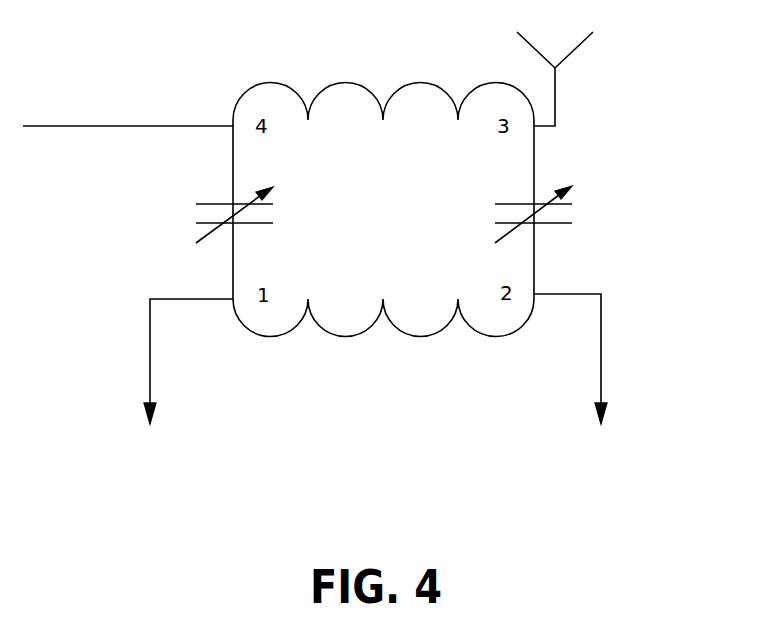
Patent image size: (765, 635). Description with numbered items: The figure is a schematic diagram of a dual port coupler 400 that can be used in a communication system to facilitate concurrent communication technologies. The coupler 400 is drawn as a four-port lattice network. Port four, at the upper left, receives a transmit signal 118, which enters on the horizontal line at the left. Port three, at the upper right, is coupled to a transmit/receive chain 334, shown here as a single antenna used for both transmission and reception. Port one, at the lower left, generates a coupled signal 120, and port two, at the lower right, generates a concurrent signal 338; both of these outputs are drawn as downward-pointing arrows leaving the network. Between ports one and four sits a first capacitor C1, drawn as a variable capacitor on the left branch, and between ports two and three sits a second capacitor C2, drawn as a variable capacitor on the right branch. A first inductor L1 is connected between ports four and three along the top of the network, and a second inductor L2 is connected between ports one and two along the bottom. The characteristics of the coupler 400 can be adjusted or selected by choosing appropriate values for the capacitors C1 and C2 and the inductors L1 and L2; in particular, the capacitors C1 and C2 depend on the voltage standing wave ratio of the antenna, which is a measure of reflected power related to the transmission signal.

The transmit signal 118 is at (73, 126).
The coupled signal 120 is at (150, 360).
The transmit/receive chain 334 is at (603, 113).
The concurrent signal 338 is at (601, 357).
The dual port coupler 400 is at (106, 518).
The first capacitor C1 is at (203, 215).
The second capacitor C2 is at (562, 214).
The first inductor L1 is at (383, 166).
The second inductor L2 is at (383, 340).